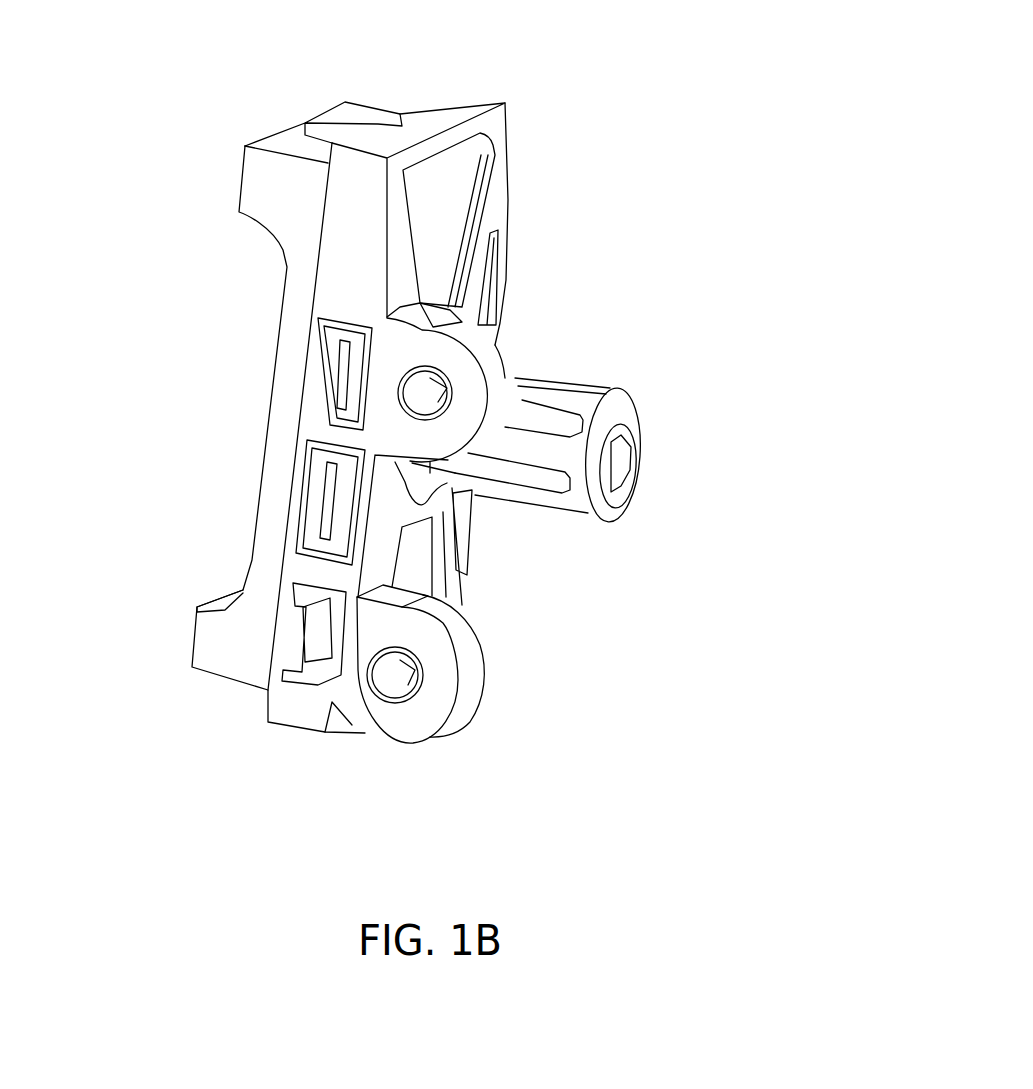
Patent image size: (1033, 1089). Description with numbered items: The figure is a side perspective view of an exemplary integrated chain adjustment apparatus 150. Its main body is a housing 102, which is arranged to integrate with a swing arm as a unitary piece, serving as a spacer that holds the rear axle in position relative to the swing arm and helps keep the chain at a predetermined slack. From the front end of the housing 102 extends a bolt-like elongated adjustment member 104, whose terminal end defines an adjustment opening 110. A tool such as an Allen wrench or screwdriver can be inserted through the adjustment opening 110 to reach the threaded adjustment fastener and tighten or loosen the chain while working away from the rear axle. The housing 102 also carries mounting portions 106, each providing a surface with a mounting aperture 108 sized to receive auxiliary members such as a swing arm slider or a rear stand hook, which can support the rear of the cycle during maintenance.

The integrated chain adjustment apparatus 150 is at (207, 102).
The housing 102 is at (277, 438).
The elongated adjustment member 104 is at (661, 376).
The mounting portion 106 is at (494, 358).
The mounting aperture 108 is at (313, 810).
The adjustment opening 110 is at (613, 460).